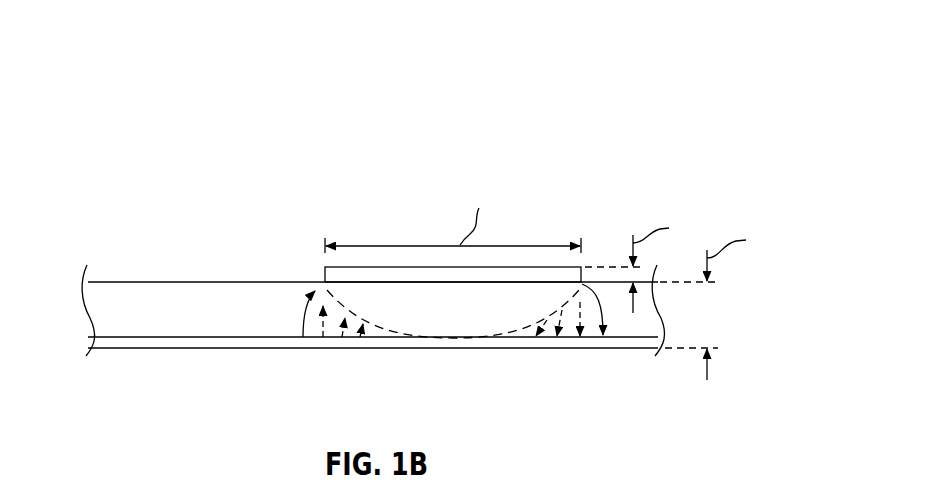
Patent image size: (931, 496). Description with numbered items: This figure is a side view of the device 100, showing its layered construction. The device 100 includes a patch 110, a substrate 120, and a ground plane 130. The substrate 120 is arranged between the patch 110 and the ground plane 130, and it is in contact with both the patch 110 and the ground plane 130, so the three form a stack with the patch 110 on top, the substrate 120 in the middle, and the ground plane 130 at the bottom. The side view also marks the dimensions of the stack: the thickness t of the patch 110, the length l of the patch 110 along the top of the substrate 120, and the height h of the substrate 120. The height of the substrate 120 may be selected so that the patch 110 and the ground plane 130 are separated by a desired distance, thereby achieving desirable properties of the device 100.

The device 100 is at (169, 176).
The patch 110 is at (368, 267).
The substrate 120 is at (163, 300).
The ground plane 130 is at (165, 349).